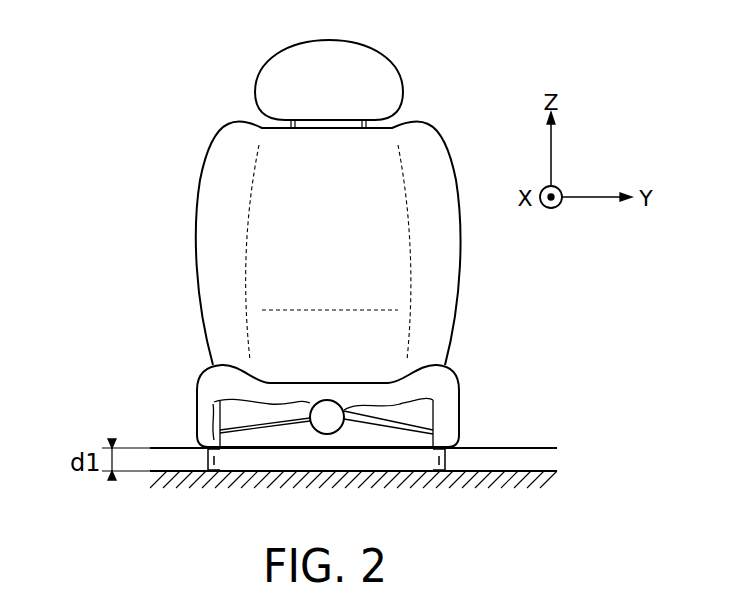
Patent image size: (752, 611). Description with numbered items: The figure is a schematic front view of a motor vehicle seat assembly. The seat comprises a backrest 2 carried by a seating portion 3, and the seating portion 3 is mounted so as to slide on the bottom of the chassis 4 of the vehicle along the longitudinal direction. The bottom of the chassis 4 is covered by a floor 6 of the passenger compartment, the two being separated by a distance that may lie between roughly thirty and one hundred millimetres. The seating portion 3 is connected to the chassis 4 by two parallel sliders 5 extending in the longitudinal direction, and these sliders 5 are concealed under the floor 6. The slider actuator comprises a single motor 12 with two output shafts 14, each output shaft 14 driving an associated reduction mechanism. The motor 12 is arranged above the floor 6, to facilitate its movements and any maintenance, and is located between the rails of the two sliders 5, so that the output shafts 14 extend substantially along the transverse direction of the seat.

The backrest 2 is at (225, 205).
The seating portion 3 is at (210, 383).
The chassis 4 is at (181, 471).
The slider 5 is at (457, 443).
The floor 6 is at (520, 448).
The motor 12 is at (337, 400).
The output shaft 14 is at (393, 425).